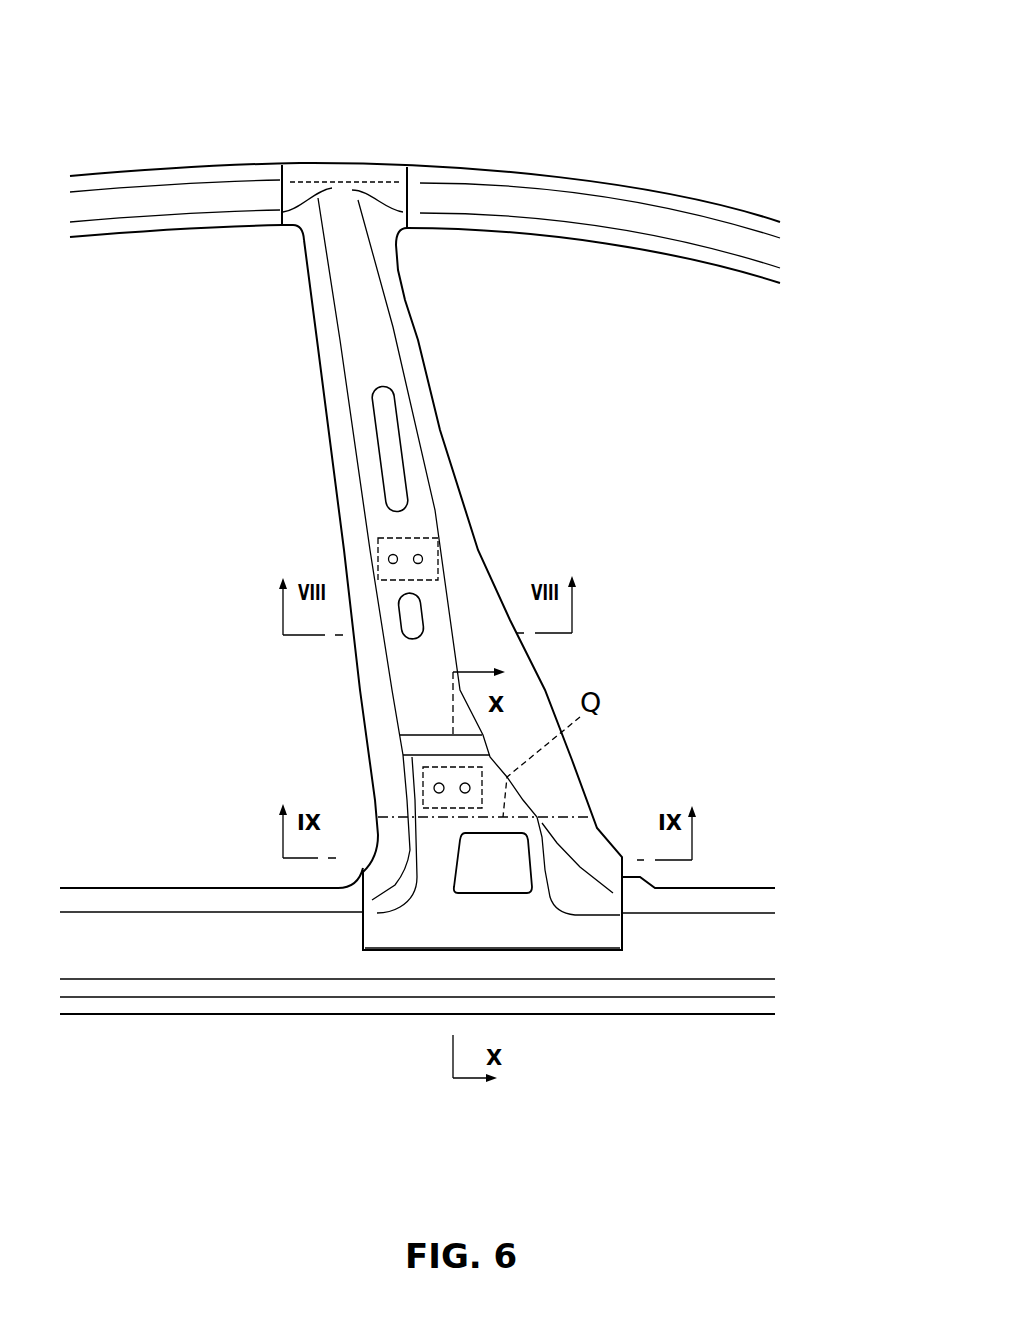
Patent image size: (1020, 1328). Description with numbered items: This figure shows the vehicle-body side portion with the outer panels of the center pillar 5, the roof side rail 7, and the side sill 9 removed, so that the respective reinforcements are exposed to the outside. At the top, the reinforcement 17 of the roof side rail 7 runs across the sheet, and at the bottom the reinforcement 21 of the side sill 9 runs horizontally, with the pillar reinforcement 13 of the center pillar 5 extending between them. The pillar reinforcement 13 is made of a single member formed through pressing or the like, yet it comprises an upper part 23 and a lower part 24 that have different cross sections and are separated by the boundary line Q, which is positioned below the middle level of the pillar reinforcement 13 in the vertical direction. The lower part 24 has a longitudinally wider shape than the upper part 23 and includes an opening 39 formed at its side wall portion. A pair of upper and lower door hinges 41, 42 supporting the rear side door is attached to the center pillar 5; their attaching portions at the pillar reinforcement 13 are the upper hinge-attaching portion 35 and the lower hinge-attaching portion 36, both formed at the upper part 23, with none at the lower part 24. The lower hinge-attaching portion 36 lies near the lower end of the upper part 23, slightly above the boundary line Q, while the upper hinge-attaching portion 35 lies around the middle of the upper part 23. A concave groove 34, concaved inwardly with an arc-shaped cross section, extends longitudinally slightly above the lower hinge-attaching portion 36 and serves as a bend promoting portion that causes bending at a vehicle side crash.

The roof side rail 7 is at (416, 136).
The reinforcement 17 is at (683, 232).
The center pillar 5 is at (472, 419).
The upper part 23 is at (443, 465).
The lower part 24 is at (567, 868).
The pillar reinforcement 13 is at (683, 565).
The upper door hinge 41 is at (398, 537).
The upper hinge-attaching portion 35 is at (407, 565).
The concave groove 34 is at (422, 744).
The lower door hinge 42 is at (422, 790).
The lower hinge-attaching portion 36 is at (455, 798).
The opening 39 is at (490, 873).
The reinforcement 21 is at (162, 938).
The side sill 9 is at (346, 1038).